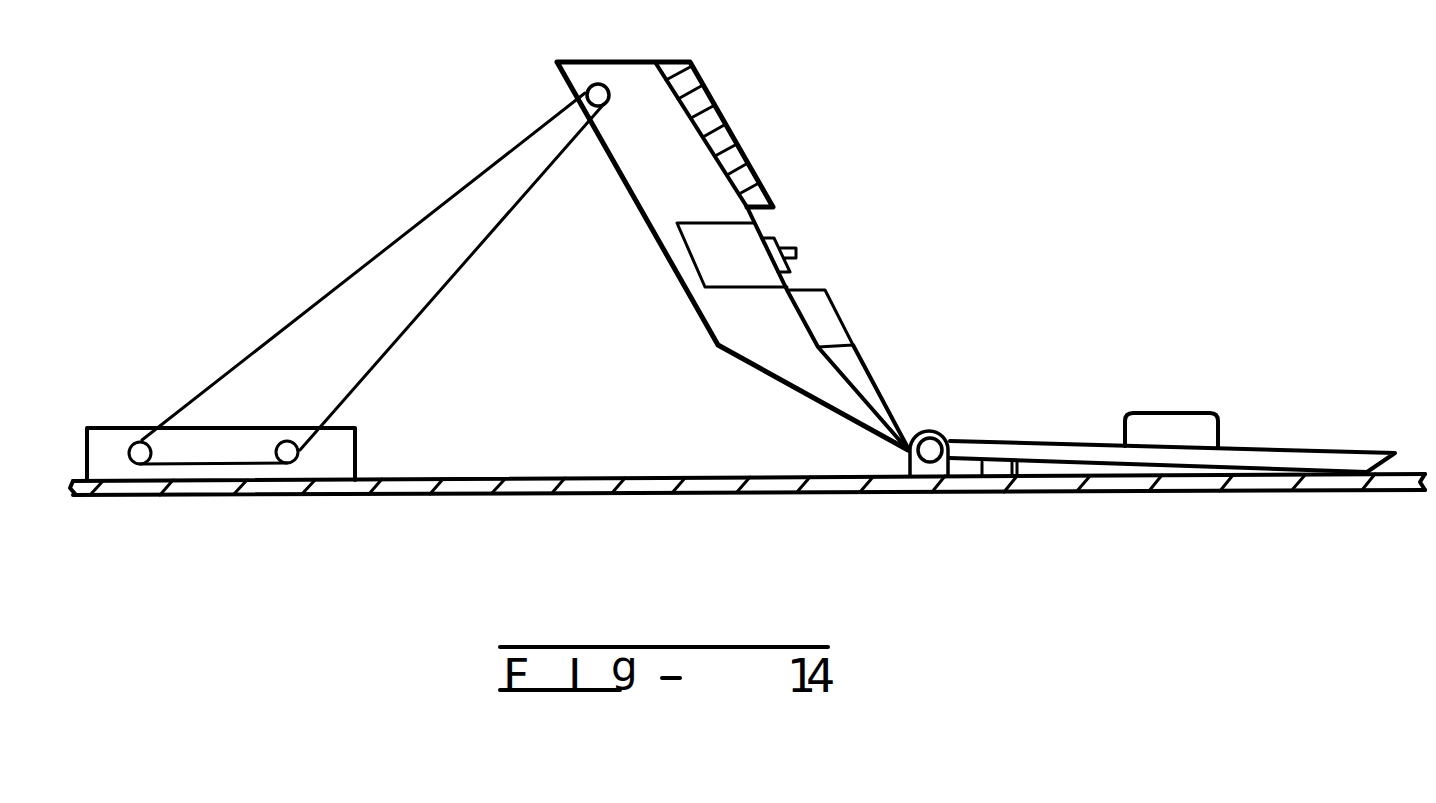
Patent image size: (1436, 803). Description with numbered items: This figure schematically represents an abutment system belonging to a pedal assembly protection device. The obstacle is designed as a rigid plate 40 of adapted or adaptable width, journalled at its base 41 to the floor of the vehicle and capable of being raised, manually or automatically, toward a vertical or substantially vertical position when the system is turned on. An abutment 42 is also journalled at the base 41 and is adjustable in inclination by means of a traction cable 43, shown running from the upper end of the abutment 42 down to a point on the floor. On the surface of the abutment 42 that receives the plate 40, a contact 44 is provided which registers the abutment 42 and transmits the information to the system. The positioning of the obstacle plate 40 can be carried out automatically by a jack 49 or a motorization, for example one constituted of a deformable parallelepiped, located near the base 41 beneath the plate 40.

The rigid plate 40 is at (1182, 425).
The base 41 is at (928, 452).
The abutment 42 is at (707, 323).
The traction cable 43 is at (297, 313).
The contact 44 is at (797, 250).
The jack 49 is at (1000, 465).